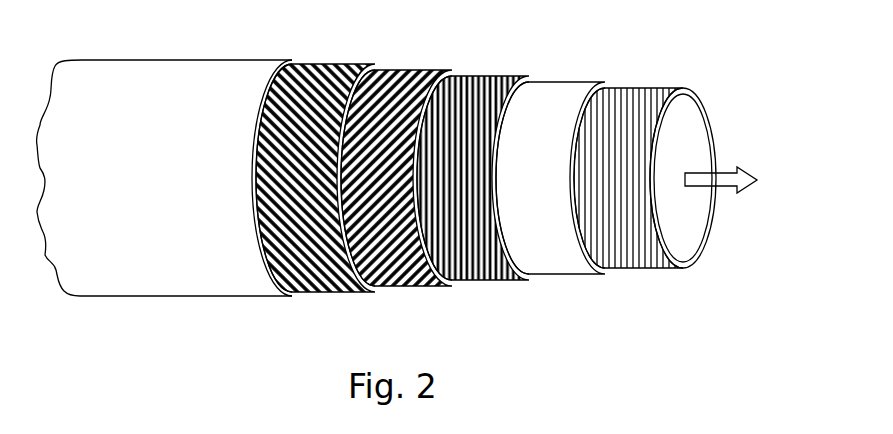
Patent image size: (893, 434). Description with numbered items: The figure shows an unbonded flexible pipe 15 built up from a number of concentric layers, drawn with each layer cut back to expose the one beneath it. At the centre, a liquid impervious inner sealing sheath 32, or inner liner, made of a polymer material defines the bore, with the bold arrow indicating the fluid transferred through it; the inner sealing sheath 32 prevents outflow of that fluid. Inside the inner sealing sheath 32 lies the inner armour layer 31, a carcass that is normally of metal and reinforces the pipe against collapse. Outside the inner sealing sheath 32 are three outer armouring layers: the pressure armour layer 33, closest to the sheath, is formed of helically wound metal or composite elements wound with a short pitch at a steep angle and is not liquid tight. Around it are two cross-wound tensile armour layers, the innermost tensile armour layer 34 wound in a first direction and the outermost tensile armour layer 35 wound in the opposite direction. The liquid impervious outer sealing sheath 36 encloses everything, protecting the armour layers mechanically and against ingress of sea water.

The unbonded flexible pipe 15 is at (397, 173).
The inner armour layer 31 is at (638, 95).
The inner sealing sheath 32 is at (558, 90).
The pressure armour layer 33 is at (478, 77).
The innermost tensile armour layer 34 is at (397, 78).
The outermost tensile armour layer 35 is at (322, 68).
The outer sealing sheath 36 is at (206, 67).